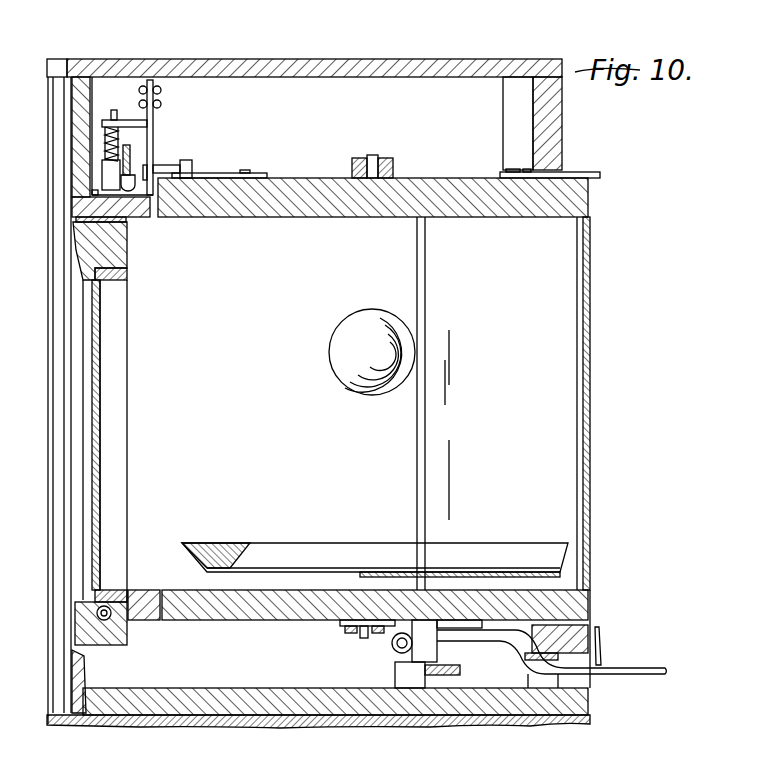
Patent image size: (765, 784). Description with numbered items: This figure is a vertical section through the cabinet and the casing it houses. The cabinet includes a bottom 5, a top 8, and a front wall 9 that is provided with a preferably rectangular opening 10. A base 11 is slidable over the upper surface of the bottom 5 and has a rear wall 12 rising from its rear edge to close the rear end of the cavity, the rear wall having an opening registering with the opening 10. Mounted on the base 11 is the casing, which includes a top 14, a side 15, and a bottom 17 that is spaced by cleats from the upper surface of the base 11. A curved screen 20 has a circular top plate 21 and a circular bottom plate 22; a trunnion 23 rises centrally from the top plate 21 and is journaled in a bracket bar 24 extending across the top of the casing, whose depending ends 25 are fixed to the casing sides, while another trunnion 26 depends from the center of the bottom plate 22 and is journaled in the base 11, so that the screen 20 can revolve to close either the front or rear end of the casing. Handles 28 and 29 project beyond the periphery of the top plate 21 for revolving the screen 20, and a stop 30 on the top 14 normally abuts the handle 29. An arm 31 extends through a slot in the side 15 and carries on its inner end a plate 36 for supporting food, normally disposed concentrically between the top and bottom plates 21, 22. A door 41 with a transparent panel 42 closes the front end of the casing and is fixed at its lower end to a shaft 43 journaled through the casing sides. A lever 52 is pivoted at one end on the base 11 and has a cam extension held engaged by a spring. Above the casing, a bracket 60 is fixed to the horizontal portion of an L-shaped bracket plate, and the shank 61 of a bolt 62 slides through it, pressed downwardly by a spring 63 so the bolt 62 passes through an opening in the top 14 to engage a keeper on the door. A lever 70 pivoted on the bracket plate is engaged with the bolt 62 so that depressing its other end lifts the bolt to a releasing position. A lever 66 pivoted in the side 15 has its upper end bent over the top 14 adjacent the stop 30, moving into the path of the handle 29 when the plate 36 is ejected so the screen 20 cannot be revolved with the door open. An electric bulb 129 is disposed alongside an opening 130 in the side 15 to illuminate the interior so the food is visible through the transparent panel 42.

The bottom 5 is at (290, 728).
The top 8 is at (263, 60).
The front wall 9 is at (72, 117).
The opening 10 is at (80, 193).
The base 11 is at (203, 690).
The rear wall 12 is at (555, 135).
The top 14 is at (78, 205).
The side 15 is at (348, 403).
The bottom 17 is at (140, 590).
The curved screen 20 is at (590, 340).
The top plate 21 is at (297, 178).
The bottom plate 22 is at (280, 621).
The trunnion 23 is at (377, 158).
The bracket bar 24 is at (395, 165).
The depending ends 25 is at (352, 175).
The trunnion 26 is at (360, 634).
The handle 28 is at (600, 173).
The handle 29 is at (238, 176).
The stop 30 is at (190, 160).
The arm 31 is at (505, 573).
The plate 36 is at (283, 545).
The door 41 is at (128, 245).
The transparent panel 42 is at (95, 388).
The shaft 43 is at (112, 620).
The lever 52 is at (632, 665).
The bracket 60 is at (136, 120).
The shank 61 is at (113, 110).
The bolt 62 is at (105, 175).
The spring 63 is at (108, 145).
The lever 66 is at (166, 170).
The lever 70 is at (154, 128).
The electric bulb 129 is at (355, 345).
The opening 130 is at (349, 388).